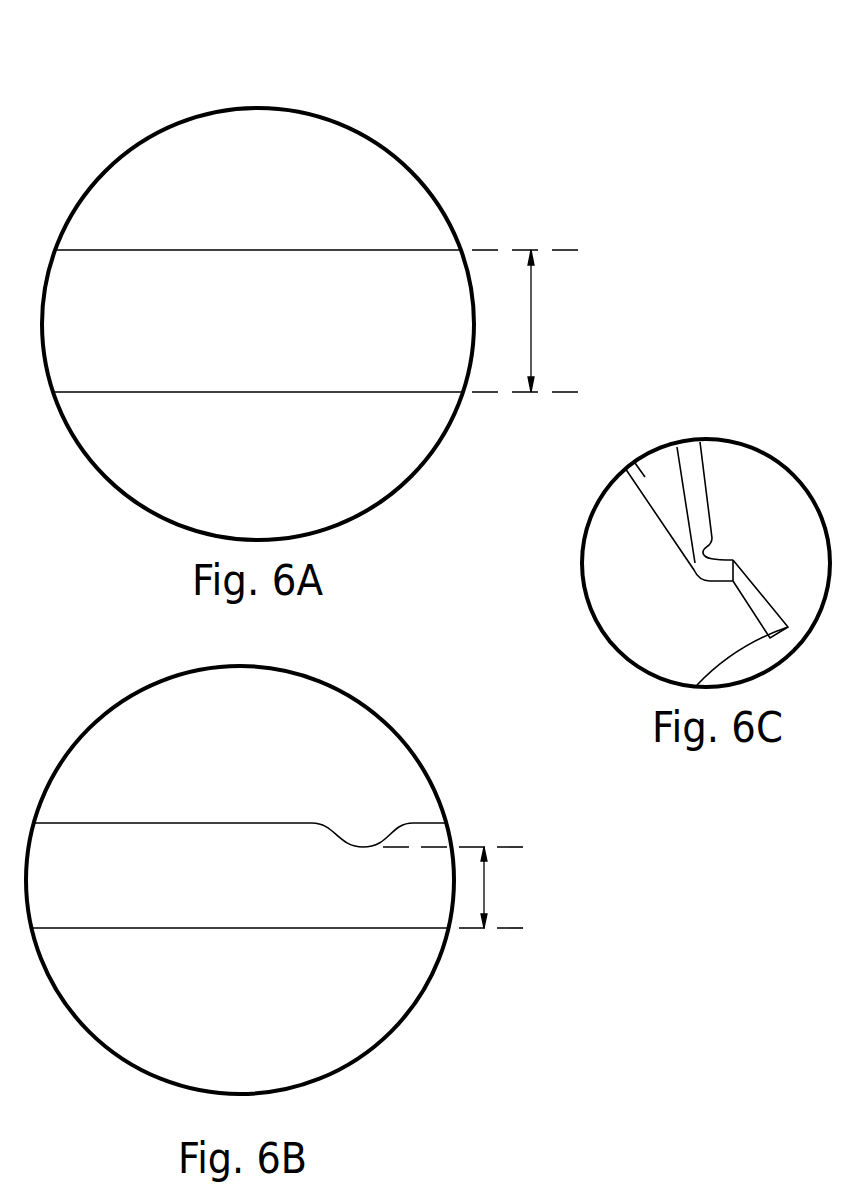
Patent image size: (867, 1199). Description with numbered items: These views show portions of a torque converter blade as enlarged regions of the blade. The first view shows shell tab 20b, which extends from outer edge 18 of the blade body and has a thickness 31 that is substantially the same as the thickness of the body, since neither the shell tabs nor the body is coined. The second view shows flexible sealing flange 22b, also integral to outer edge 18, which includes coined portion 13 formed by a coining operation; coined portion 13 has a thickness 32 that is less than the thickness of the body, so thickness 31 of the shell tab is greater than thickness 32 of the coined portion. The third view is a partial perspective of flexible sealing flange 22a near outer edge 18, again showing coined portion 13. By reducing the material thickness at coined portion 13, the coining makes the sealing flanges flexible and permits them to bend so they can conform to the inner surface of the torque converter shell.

In FIG. 6A, the shell tab 20b is at (328, 250).
In FIG. 6A, the thickness 31 is at (531, 318).
In FIG. 6B, the flexible sealing flange 22b is at (313, 823).
In FIG. 6B, the coined portion 13 is at (373, 823).
In FIG. 6C, the coined portion 13 is at (727, 544).
In FIG. 6B, the thickness 32 is at (484, 886).
In FIG. 6C, the flexible sealing flange 22a is at (663, 483).
In FIG. 6C, the outer edge 18 is at (752, 598).